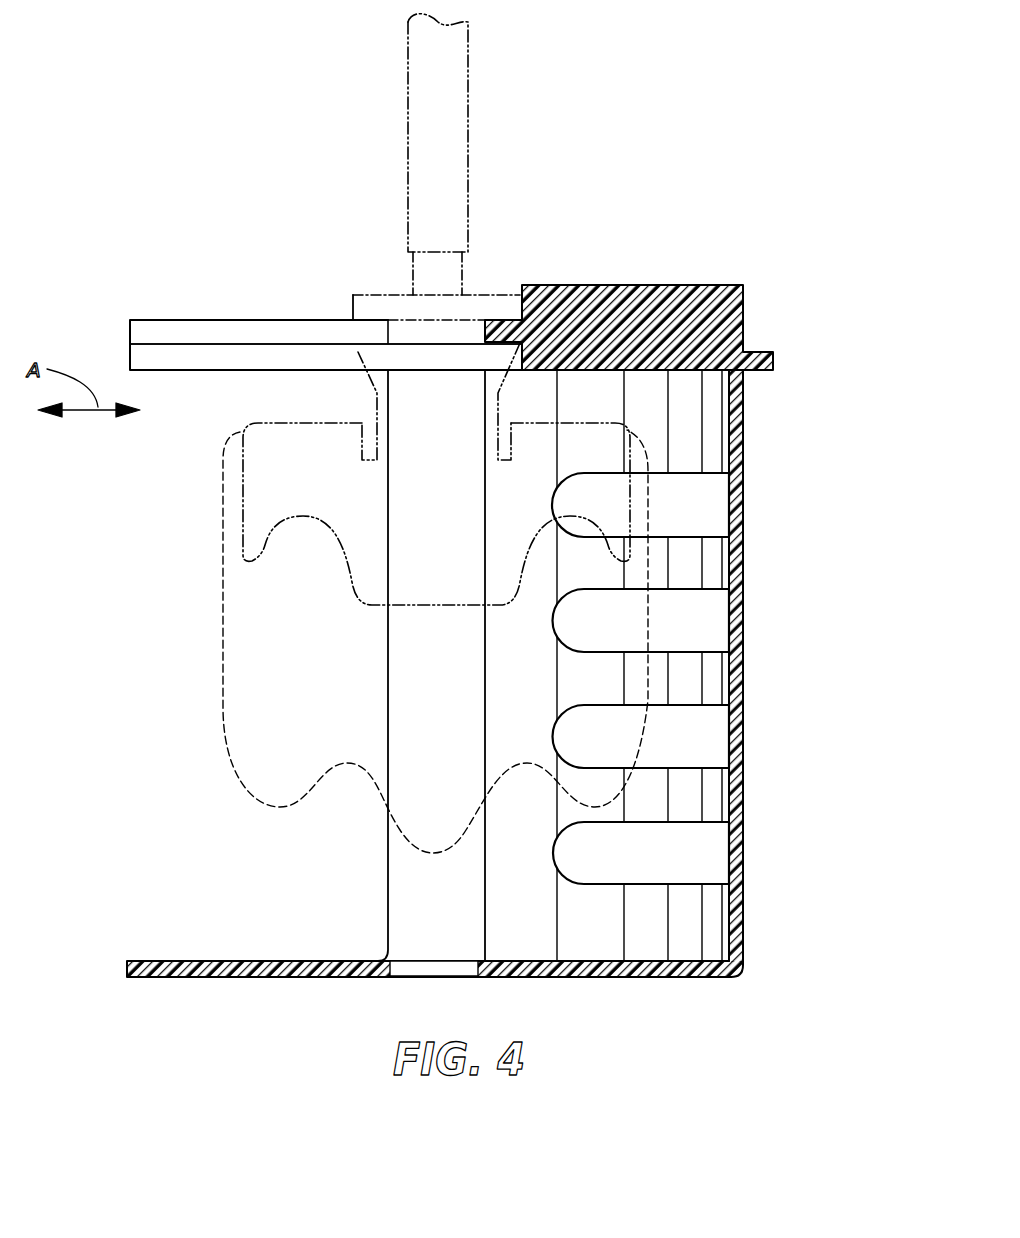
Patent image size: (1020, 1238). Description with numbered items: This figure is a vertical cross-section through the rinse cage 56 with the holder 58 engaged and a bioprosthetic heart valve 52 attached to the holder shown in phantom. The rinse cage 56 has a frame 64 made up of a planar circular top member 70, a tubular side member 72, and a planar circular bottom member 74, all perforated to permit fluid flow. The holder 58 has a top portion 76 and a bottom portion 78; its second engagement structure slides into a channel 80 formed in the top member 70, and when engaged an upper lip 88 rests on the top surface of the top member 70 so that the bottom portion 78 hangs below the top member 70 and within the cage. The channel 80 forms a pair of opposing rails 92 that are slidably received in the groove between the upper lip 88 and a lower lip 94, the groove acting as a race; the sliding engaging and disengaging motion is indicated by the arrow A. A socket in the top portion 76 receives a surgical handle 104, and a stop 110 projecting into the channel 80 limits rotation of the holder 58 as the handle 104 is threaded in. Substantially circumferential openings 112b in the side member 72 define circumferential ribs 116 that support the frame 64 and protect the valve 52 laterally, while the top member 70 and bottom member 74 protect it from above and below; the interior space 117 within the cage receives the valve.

The surgical handle 104 is at (468, 95).
The upper lip 88 is at (488, 307).
The stop 110 is at (353, 296).
The top member 70 is at (718, 292).
The lower lip 94 is at (527, 352).
The channel 80 is at (143, 330).
The rails 92 is at (167, 332).
The top portion 76 is at (360, 356).
The circumferential ribs 116 is at (707, 560).
The openings 112b is at (707, 495).
The side member 72 is at (713, 917).
The bottom member 74 is at (133, 962).
The bottom portion 78 is at (244, 433).
The holder 58 is at (251, 491).
The bioprosthetic heart valve 52 is at (222, 640).
The rinse cage 56 is at (767, 715).
The frame 64 is at (748, 750).
The chamber 117 is at (205, 874).